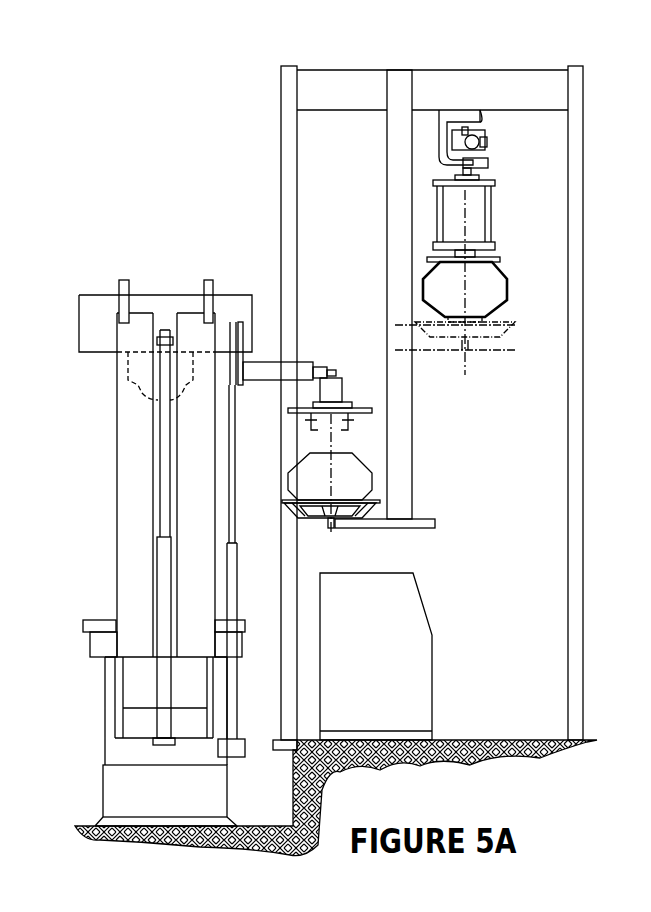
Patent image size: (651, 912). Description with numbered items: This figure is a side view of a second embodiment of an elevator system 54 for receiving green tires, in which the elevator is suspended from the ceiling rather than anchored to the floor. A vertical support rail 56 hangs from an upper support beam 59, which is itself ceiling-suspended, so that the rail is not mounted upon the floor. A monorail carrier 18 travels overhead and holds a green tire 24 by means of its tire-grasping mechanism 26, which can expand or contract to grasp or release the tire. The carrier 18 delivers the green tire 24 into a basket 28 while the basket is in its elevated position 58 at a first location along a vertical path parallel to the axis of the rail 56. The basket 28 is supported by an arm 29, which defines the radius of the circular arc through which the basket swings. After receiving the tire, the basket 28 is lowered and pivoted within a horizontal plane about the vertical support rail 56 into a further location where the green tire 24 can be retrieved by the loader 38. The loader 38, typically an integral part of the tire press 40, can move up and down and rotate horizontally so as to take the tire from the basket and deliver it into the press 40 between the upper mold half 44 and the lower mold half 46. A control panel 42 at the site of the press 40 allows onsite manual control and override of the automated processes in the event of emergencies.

The monorail carrier 18 is at (462, 112).
The green tire 24 is at (507, 290).
The tire-grasping mechanism 26 is at (510, 178).
The basket 28 is at (311, 520).
The arm 29 is at (365, 525).
The loader 38 is at (300, 370).
The tire press 40 is at (168, 302).
The control panel 42 is at (424, 606).
The upper mold half 44 is at (95, 332).
The lower mold half 46 is at (100, 645).
The elevator system 54 is at (423, 432).
The vertical support rail 56 is at (400, 252).
The elevated position 58 is at (526, 308).
The upper support beam 59 is at (357, 98).